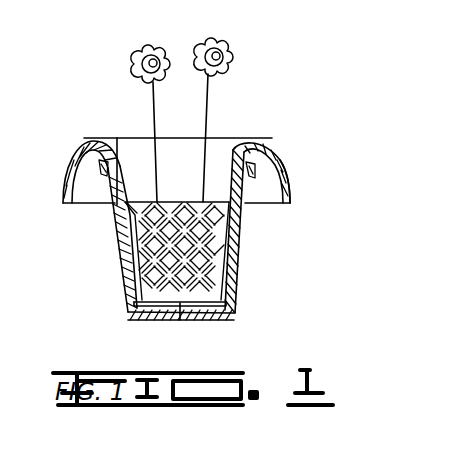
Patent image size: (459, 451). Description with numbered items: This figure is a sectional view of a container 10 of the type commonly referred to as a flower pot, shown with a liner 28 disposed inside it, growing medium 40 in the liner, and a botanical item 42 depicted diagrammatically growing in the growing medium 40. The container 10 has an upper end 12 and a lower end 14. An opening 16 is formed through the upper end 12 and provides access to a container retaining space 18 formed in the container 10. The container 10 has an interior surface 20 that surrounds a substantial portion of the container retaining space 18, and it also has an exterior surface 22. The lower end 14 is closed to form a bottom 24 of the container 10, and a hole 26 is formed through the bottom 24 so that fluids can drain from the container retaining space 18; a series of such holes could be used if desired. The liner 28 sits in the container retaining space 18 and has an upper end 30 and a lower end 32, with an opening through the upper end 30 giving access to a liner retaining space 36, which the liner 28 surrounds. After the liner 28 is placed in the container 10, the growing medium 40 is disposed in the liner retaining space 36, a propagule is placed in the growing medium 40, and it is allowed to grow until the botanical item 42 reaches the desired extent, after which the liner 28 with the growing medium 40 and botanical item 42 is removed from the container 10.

The container 10 is at (243, 259).
The upper end 12 is at (268, 141).
The lower end 14 is at (232, 320).
The opening 16 is at (117, 138).
The container retaining space 18 is at (233, 139).
The interior surface 20 is at (133, 271).
The exterior surface 22 is at (240, 288).
The bottom 24 is at (128, 312).
The hole 26 is at (180, 320).
The liner 28 is at (290, 183).
The upper end 30 is at (290, 204).
The lower end 32 is at (145, 316).
The liner retaining space 36 is at (146, 162).
The growing medium 40 is at (148, 233).
The botanical item 42 is at (240, 48).